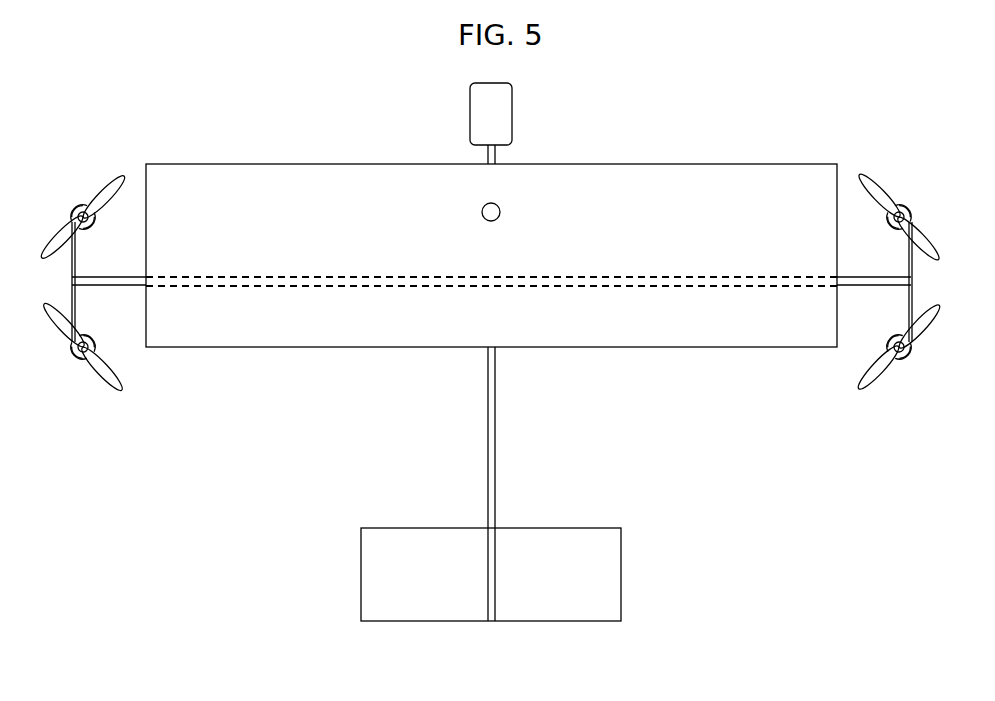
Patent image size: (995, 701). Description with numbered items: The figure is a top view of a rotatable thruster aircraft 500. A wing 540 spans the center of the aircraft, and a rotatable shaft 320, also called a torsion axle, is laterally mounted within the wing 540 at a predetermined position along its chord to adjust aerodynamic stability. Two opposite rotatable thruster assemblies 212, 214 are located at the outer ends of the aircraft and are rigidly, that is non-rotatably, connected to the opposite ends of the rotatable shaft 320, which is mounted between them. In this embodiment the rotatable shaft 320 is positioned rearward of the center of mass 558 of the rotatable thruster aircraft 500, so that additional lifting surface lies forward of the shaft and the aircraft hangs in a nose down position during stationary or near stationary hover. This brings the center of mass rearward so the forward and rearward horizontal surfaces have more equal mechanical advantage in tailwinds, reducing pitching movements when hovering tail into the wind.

The rotatable thruster aircraft 500 is at (258, 411).
The wing 540 is at (662, 164).
The center of mass 558 is at (500, 210).
The rotatable shaft 320 is at (200, 272).
The rotatable thruster assembly 214 is at (63, 385).
The rotatable thruster assembly 212 is at (917, 402).